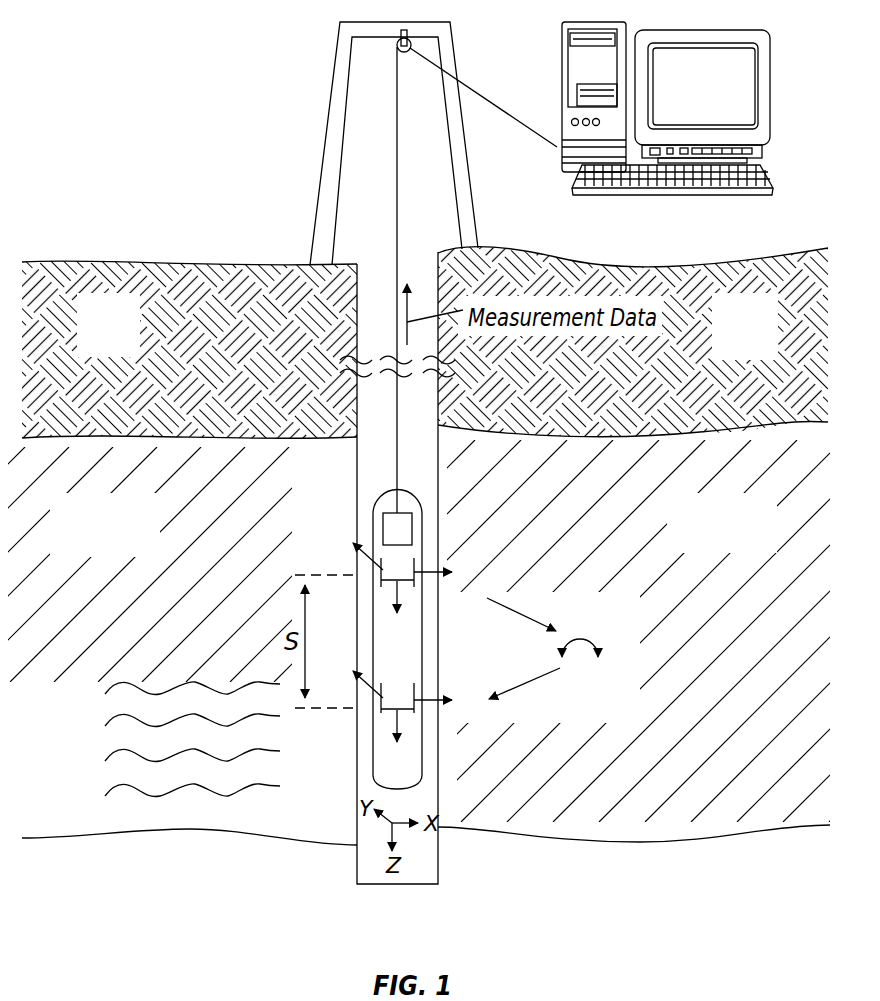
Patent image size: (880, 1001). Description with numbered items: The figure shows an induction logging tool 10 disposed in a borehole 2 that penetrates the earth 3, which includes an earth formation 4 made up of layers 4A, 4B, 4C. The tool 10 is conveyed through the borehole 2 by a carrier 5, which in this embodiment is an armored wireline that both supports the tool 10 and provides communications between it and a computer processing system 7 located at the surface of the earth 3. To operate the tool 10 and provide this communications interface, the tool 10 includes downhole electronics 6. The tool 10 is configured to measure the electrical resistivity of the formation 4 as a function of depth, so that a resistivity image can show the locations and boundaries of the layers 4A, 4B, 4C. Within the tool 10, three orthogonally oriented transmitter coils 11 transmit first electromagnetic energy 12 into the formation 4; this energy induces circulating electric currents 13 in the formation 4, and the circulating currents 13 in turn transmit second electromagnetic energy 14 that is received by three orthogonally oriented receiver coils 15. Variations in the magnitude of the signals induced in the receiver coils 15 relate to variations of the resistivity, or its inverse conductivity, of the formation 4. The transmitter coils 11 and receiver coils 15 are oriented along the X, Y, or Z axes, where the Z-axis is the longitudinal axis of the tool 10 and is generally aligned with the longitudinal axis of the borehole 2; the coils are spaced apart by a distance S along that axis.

The borehole 2 is at (365, 299).
The earth 3 is at (117, 354).
The earth formation 4 is at (115, 549).
The formation layer 4A is at (93, 717).
The formation layer 4B is at (93, 754).
The formation layer 4C is at (93, 791).
The carrier 5 is at (397, 422).
The downhole electronics 6 is at (383, 537).
The computer processing system 7 is at (561, 42).
The induction logging tool 10 is at (372, 508).
The transmitter coils 11 is at (416, 560).
The first electromagnetic energy 12 is at (527, 613).
The circulating electric currents 13 is at (596, 640).
The second electromagnetic energy 14 is at (525, 686).
The receiver coils 15 is at (416, 690).